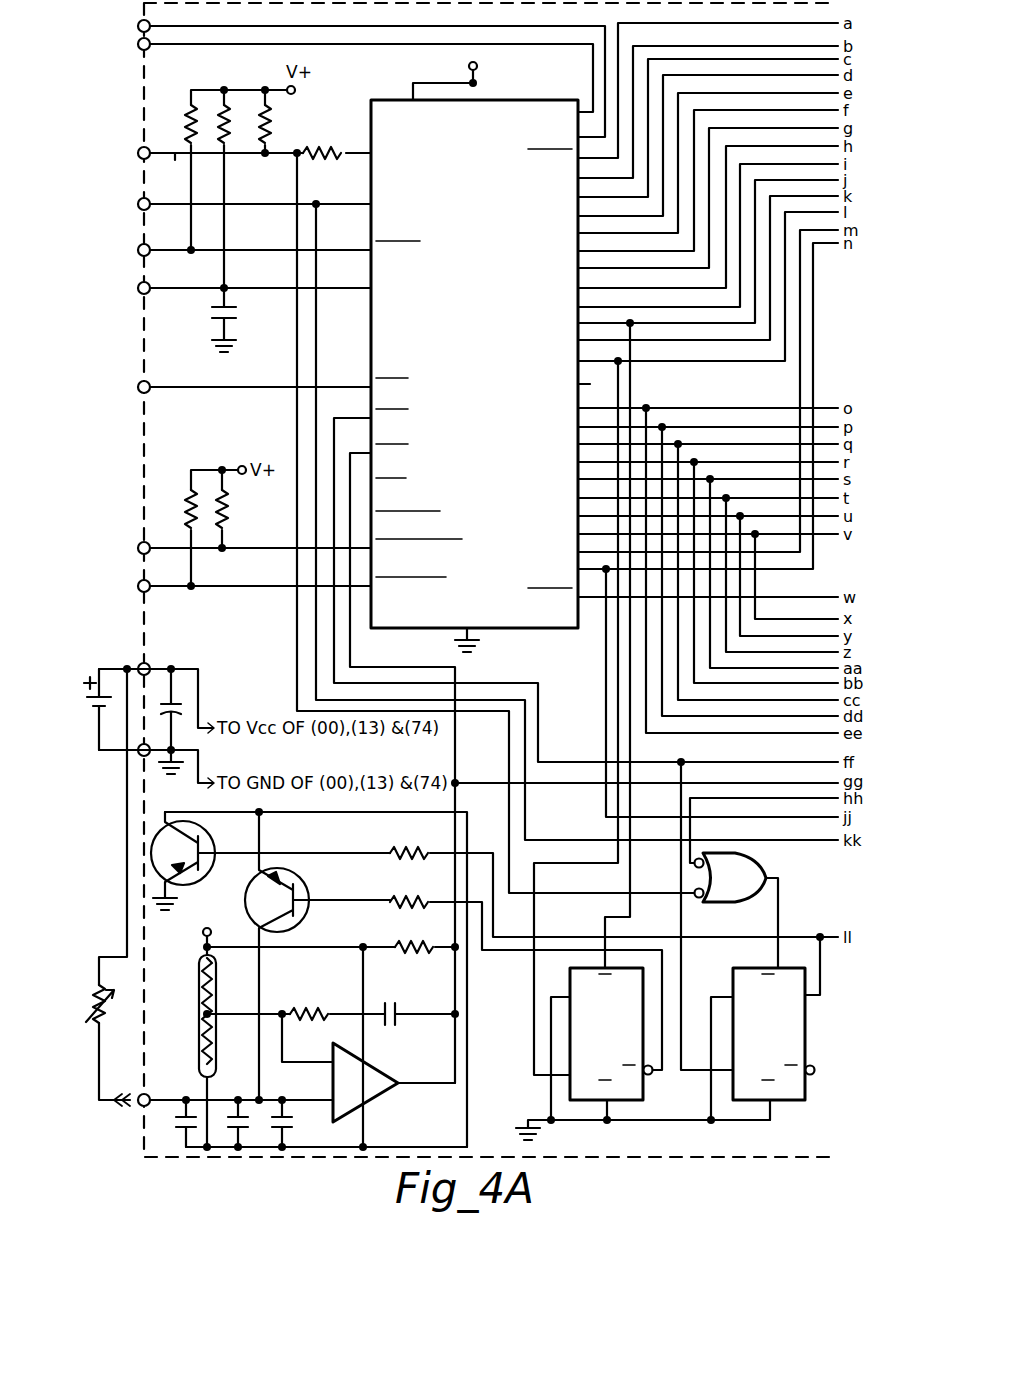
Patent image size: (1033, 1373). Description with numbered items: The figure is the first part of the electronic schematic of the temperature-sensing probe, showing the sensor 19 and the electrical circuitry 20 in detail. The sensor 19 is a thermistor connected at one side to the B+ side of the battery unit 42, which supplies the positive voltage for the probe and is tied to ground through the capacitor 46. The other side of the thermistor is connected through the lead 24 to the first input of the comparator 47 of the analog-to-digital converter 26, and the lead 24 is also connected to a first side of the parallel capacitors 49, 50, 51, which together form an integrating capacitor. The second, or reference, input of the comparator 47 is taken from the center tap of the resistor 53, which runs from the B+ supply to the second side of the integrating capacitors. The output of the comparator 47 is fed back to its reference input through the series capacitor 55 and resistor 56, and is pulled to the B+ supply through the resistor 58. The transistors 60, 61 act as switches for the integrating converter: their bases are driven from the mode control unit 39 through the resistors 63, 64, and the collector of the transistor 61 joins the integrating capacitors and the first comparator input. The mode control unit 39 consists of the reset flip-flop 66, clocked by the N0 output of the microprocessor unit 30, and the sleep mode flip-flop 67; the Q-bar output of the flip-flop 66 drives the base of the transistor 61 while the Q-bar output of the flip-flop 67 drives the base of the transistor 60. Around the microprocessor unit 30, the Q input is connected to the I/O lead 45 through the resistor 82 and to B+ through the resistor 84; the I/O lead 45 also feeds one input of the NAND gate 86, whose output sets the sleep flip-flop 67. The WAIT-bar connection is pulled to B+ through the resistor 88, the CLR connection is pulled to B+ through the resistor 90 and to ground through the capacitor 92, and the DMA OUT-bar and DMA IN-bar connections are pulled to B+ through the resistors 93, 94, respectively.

The sensor 19 is at (108, 884).
The electrical circuitry 20 is at (134, 1126).
The lead 24 is at (186, 1074).
The analog-to-digital converter 26 is at (190, 1178).
The microprocessor unit 30 is at (388, 98).
The mode control unit 39 is at (646, 1132).
The battery unit 42 is at (116, 682).
The I/O lead 45 is at (164, 171).
The capacitor 46 is at (188, 690).
The comparator 47 is at (380, 1068).
The capacitor 49 is at (182, 1128).
The capacitor 50 is at (234, 1112).
The capacitor 51 is at (286, 1116).
The resistor 53 is at (202, 1012).
The capacitor 55 is at (376, 1012).
The resistor 56 is at (302, 1006).
The resistor 58 is at (400, 944).
The transistor 60 is at (208, 834).
The transistor 61 is at (300, 880).
The resistor 63 is at (406, 850).
The resistor 64 is at (406, 898).
The reset flip-flop 66 is at (570, 974).
The sleep mode flip-flop 67 is at (732, 978).
The resistor 82 is at (344, 142).
The resistor 84 is at (260, 98).
The NAND gate 86 is at (770, 874).
The resistor 88 is at (182, 112).
The resistor 90 is at (215, 96).
The capacitor 92 is at (220, 310).
The resistor 93 is at (230, 508).
The resistor 94 is at (184, 510).